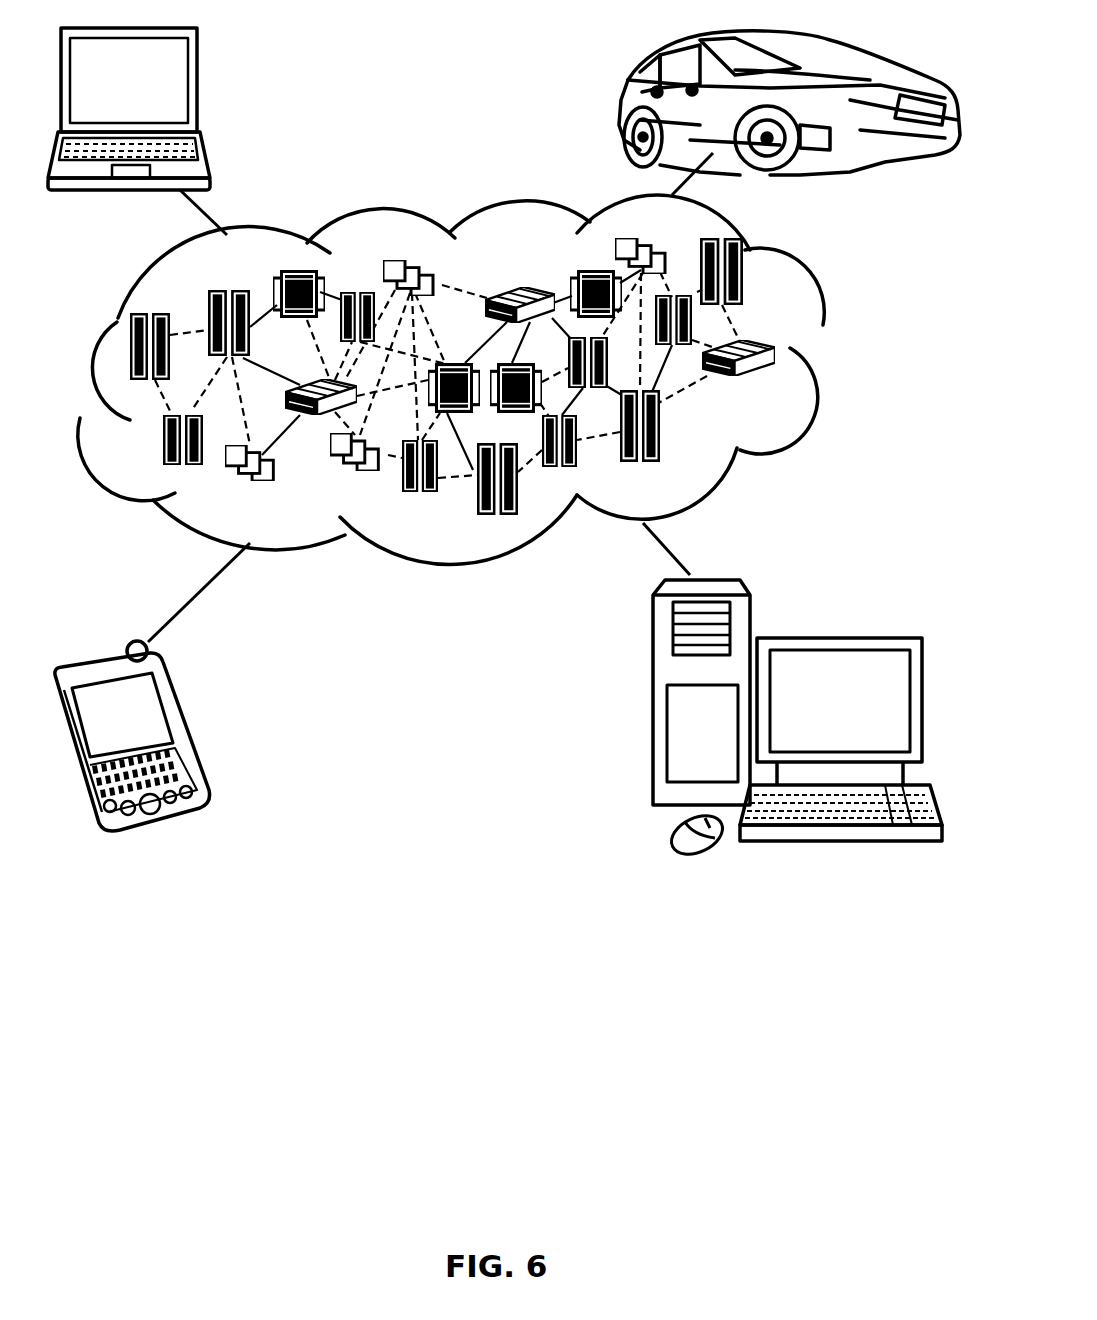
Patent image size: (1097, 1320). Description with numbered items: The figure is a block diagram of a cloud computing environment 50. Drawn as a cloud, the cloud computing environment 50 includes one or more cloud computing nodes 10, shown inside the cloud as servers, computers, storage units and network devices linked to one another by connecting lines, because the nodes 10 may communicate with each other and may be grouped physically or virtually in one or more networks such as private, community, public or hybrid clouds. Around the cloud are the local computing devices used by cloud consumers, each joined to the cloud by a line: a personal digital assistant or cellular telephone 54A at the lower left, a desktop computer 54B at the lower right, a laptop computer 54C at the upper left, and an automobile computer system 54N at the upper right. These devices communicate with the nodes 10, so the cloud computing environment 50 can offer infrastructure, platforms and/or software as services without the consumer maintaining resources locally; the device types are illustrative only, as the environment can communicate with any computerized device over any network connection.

The cloud computing environment 50 is at (495, 379).
The cloud computing node 10 is at (788, 388).
The personal digital assistant or cellular telephone 54A is at (186, 732).
The desktop computer 54B is at (838, 638).
The laptop computer 54C is at (197, 90).
The automobile computer system 54N is at (622, 104).